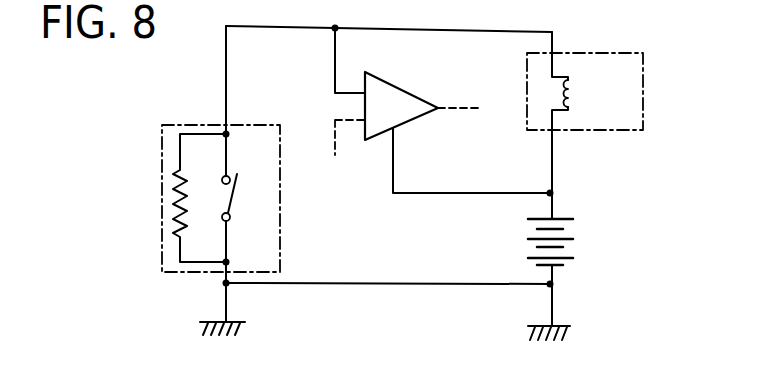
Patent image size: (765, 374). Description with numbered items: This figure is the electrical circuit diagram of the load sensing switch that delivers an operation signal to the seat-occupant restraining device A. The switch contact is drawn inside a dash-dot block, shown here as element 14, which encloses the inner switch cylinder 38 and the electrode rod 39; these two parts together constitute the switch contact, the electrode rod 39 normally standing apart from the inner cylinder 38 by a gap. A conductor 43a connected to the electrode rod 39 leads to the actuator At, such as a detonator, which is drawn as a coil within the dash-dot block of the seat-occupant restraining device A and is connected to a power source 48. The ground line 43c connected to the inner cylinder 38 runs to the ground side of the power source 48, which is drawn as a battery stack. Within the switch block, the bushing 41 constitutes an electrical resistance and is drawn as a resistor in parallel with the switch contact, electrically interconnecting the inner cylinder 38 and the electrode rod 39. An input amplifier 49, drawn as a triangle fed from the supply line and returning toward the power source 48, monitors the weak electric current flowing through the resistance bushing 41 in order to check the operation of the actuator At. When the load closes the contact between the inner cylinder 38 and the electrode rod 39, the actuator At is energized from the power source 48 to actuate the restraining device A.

The switch unit 14 is at (195, 123).
The bushing 41 is at (180, 213).
The electrode rod 39 is at (221, 180).
The inner switch cylinder 38 is at (229, 211).
The conductor 43a is at (227, 161).
The ground line 43c is at (227, 232).
The input amplifier 49 is at (397, 98).
The seat-occupant restraining device A is at (610, 53).
The actuator At is at (580, 88).
The power source 48 is at (574, 243).